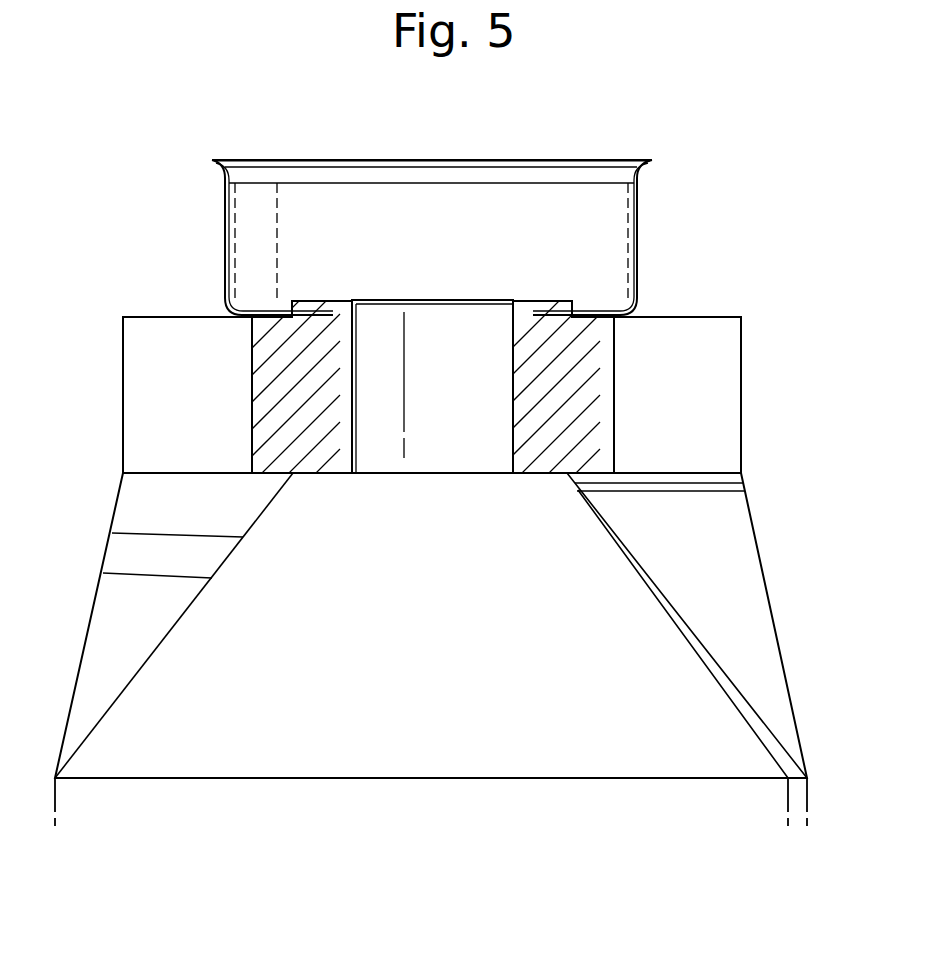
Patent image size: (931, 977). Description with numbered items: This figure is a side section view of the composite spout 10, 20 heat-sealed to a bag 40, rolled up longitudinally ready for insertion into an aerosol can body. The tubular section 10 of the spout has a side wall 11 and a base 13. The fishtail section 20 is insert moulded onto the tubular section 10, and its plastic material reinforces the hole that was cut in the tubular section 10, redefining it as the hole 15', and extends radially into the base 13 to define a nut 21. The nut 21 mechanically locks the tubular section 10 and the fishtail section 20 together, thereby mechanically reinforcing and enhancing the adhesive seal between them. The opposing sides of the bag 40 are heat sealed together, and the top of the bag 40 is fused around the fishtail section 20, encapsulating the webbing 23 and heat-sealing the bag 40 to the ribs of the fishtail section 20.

The tubular section 10 is at (206, 150).
The side wall 11 is at (637, 228).
The base 13 is at (597, 300).
The redefined hole 15' is at (432, 297).
The fishtail section 20 is at (265, 380).
The nut 21 is at (313, 300).
The webbing 23 is at (582, 378).
The bag 40 is at (720, 585).